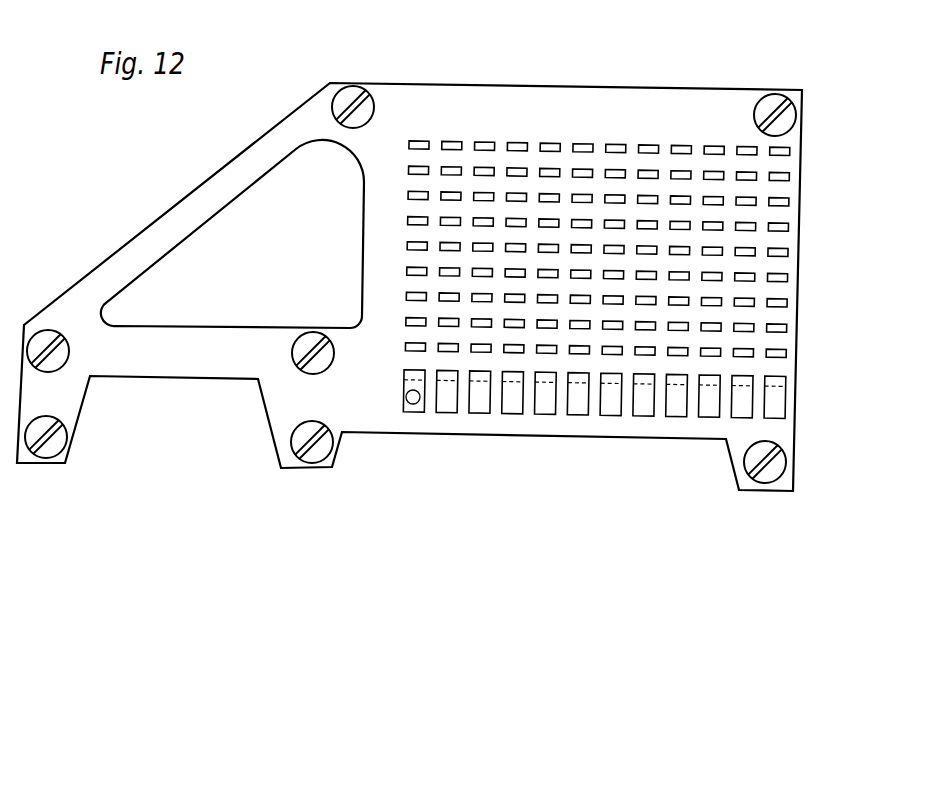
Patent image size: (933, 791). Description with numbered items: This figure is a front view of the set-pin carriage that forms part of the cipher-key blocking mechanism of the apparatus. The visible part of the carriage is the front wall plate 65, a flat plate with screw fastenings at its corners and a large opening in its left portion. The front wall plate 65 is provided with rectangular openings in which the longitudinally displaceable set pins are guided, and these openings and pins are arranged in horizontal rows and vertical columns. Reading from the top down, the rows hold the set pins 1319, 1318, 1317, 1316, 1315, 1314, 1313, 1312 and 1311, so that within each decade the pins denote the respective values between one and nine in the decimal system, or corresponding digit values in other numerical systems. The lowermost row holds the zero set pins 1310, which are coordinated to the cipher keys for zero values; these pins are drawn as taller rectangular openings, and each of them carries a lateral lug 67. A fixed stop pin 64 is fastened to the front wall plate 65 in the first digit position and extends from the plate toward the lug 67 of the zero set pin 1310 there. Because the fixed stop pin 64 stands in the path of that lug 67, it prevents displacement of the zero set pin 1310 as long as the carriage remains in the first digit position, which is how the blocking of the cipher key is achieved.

The front wall plate 65 is at (698, 96).
The fixed stop pin 64 is at (415, 406).
The lateral lug 67 is at (479, 409).
The set pin 13/0 1310 is at (782, 398).
The set pin 13/1 1311 is at (790, 354).
The set pin 13/2 1312 is at (790, 328).
The set pin 13/3 1313 is at (790, 303).
The set pin 13/4 1314 is at (790, 278).
The set pin 13/5 1315 is at (790, 252).
The set pin 13/6 1316 is at (790, 227).
The set pin 13/7 1317 is at (790, 202).
The set pin 13/8 1318 is at (790, 177).
The set pin 13/9 1319 is at (790, 152).